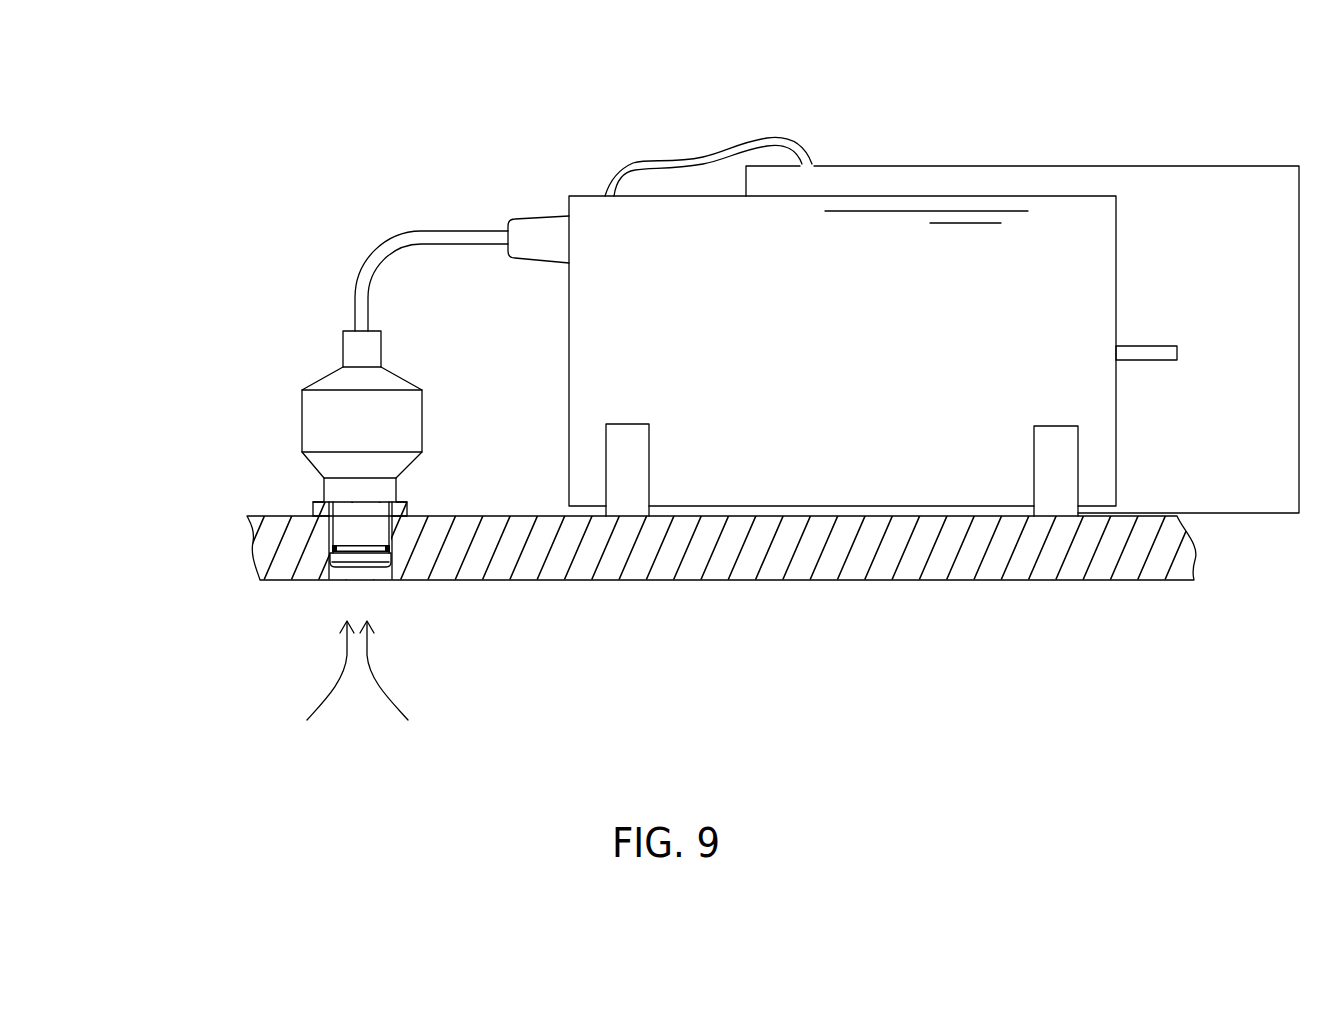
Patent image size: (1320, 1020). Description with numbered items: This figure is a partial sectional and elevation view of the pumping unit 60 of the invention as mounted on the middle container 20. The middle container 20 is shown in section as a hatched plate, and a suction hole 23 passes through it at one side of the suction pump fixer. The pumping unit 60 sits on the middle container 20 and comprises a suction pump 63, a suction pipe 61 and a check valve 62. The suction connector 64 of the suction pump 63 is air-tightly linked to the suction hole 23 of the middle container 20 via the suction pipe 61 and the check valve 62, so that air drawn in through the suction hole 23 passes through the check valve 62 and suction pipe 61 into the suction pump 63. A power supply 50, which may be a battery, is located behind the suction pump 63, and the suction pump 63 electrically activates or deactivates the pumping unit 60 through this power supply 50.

The middle container 20 is at (663, 580).
The suction hole 23 is at (340, 578).
The power supply 50 is at (928, 172).
The pumping unit 60 is at (533, 68).
The suction pipe 61 is at (380, 250).
The check valve 62 is at (320, 393).
The suction pump 63 is at (595, 217).
The suction connector 64 is at (552, 230).